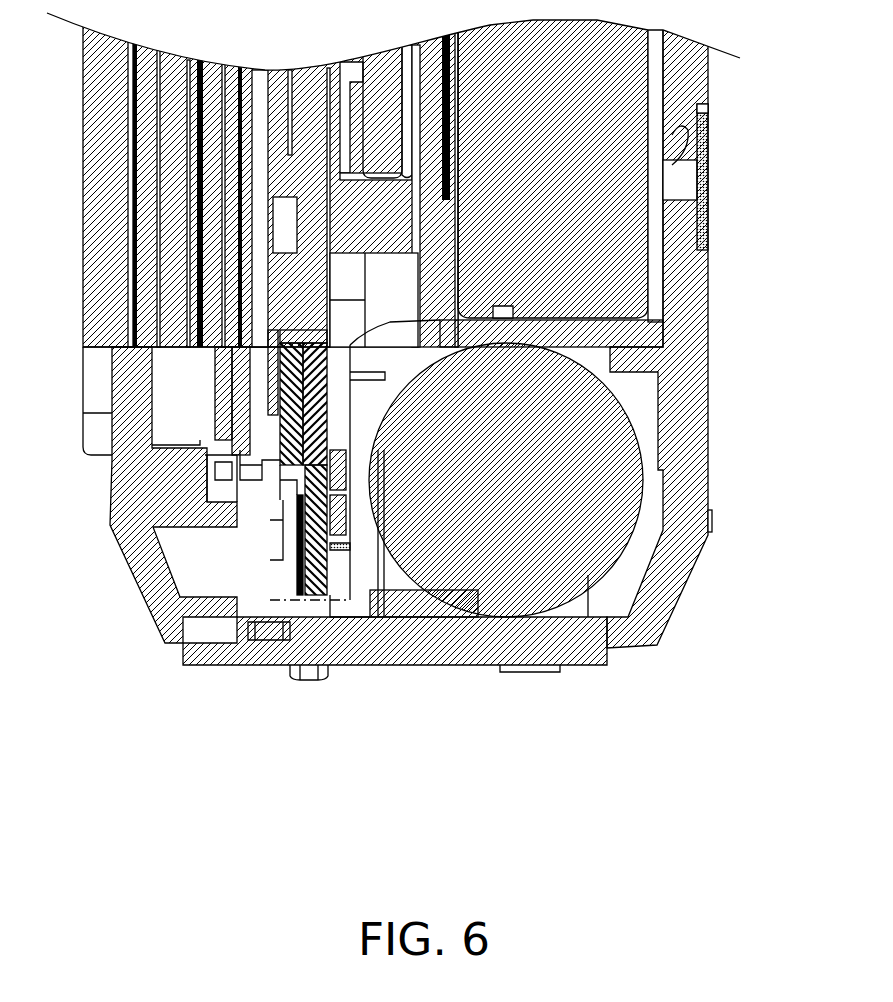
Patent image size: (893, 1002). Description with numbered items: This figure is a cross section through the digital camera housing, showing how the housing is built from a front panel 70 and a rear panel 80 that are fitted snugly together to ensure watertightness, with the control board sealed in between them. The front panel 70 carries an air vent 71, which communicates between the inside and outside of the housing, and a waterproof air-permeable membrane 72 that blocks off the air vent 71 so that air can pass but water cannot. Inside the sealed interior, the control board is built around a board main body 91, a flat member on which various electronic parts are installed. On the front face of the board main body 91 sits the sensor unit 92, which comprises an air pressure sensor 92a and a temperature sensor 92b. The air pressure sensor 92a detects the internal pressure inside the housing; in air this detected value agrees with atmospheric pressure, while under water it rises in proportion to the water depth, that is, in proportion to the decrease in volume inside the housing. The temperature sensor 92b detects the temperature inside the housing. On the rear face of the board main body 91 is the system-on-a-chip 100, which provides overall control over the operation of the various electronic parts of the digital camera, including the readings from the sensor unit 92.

The front panel 70 is at (692, 395).
The air vent 71 is at (703, 118).
The waterproof air-permeable membrane 72 is at (708, 170).
The rear panel 80 is at (165, 488).
The board main body 91 is at (297, 560).
The sensor unit 92 is at (367, 624).
The air pressure sensor 92a is at (328, 512).
The temperature sensor 92b is at (350, 460).
The system-on-a-chip 100 is at (280, 452).